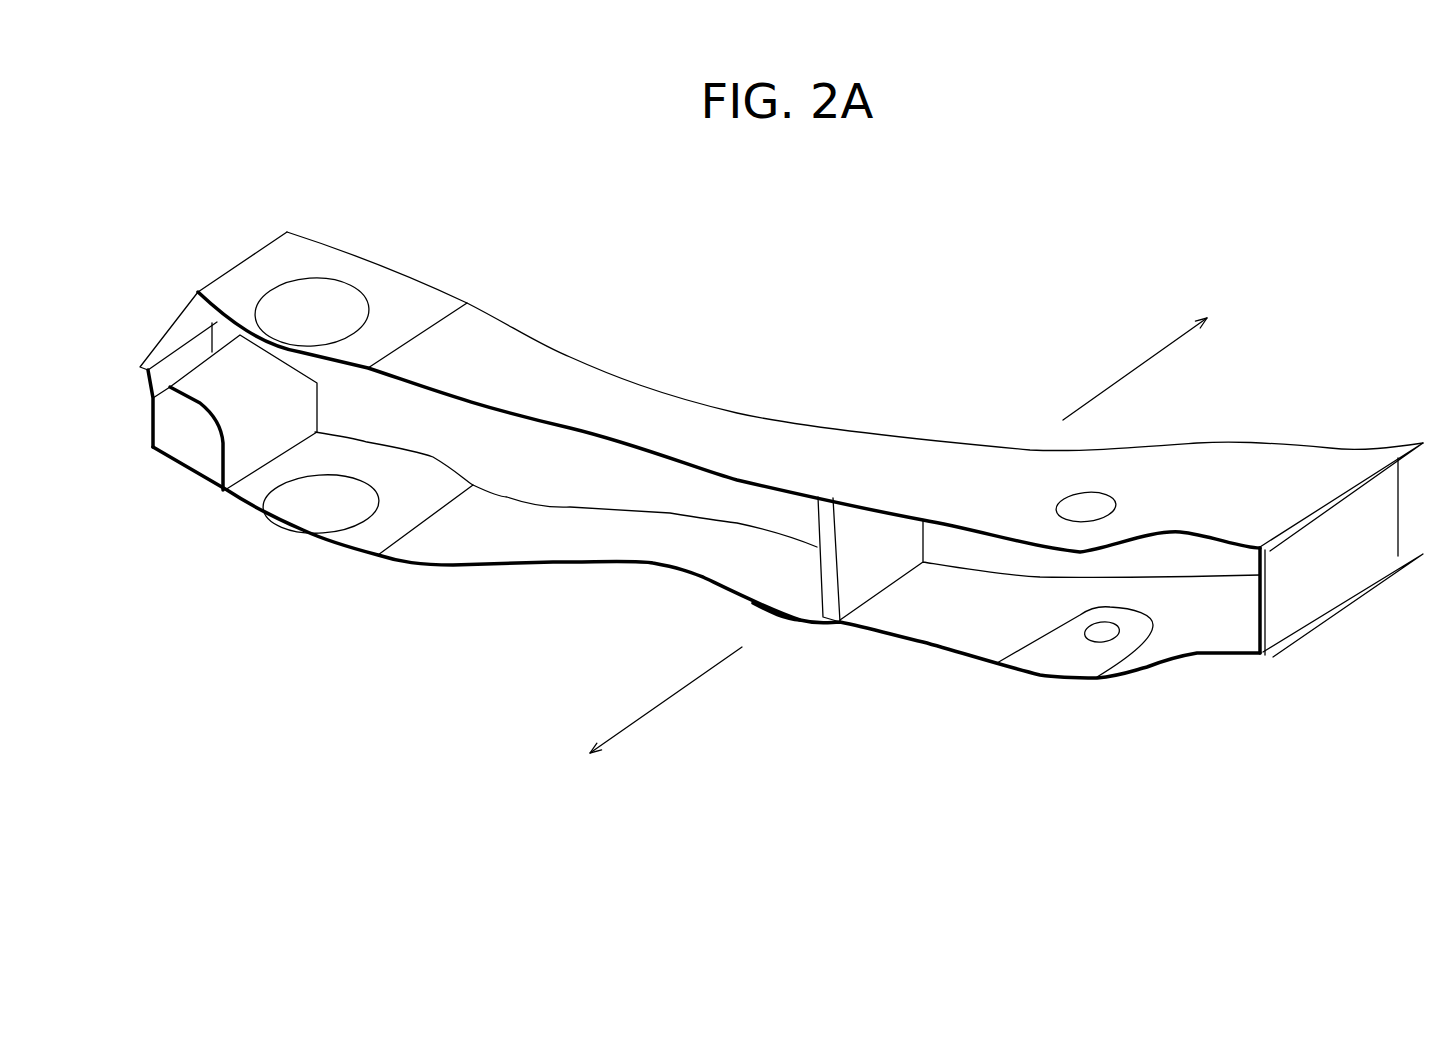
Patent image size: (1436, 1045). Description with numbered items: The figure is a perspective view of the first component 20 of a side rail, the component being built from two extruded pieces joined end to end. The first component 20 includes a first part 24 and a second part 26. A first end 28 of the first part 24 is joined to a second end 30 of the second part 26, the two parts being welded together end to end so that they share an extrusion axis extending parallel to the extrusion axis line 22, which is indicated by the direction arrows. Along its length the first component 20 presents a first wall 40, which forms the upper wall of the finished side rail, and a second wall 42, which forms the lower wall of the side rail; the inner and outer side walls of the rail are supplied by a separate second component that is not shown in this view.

The first component 20 is at (781, 479).
The extrusion axis line 22 is at (1132, 370).
The first part 24 is at (458, 567).
The second part 26 is at (1155, 667).
The first end 28 is at (818, 550).
The second end 30 is at (835, 565).
The first wall 40 is at (662, 395).
The second wall 42 is at (795, 622).